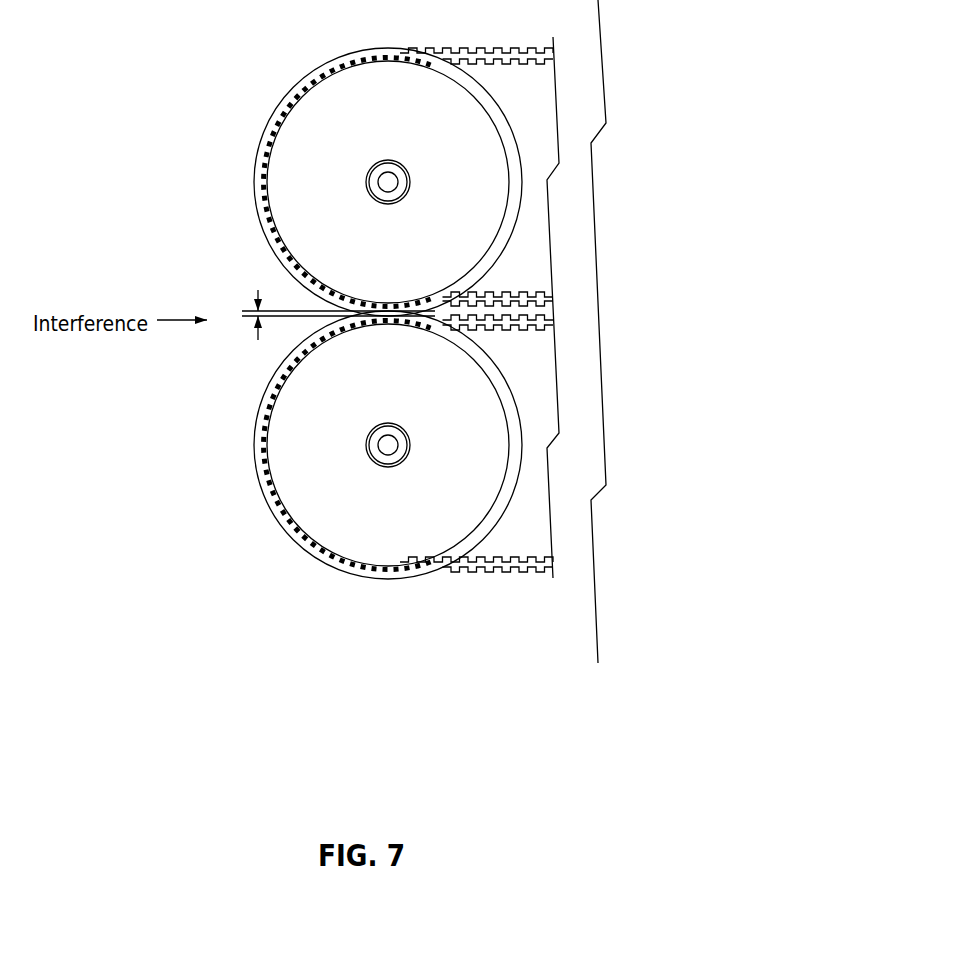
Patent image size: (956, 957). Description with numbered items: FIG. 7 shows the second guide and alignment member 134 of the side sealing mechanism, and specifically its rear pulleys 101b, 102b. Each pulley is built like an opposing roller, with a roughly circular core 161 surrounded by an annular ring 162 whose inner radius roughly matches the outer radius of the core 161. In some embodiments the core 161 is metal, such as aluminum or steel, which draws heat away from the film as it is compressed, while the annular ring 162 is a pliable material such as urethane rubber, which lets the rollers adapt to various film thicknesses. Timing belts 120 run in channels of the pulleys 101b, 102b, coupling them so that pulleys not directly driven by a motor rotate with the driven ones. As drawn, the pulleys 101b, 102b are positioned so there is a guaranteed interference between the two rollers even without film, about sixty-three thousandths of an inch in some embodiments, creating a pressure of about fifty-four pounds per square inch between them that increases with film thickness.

The core 161 is at (298, 160).
The annular ring 162 is at (290, 86).
The rear pulley 101b is at (386, 155).
The rear pulley 102b is at (390, 419).
The timing belt 120 is at (527, 568).
The second guide and alignment member 134 is at (627, 332).